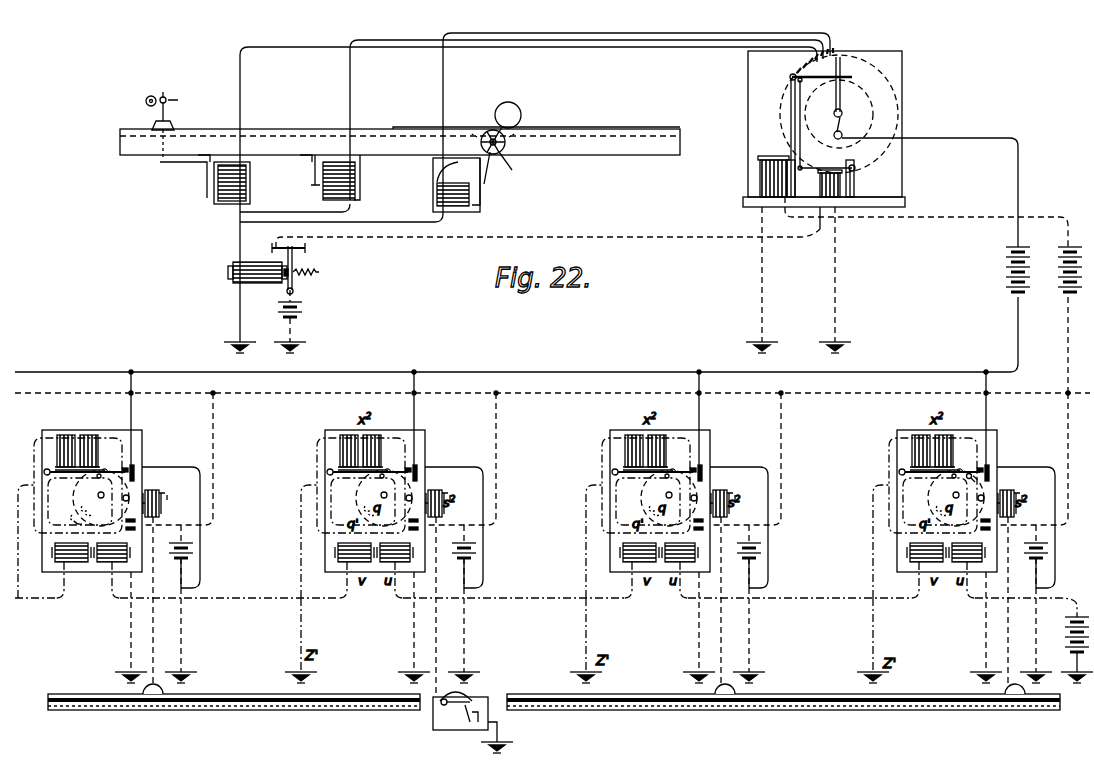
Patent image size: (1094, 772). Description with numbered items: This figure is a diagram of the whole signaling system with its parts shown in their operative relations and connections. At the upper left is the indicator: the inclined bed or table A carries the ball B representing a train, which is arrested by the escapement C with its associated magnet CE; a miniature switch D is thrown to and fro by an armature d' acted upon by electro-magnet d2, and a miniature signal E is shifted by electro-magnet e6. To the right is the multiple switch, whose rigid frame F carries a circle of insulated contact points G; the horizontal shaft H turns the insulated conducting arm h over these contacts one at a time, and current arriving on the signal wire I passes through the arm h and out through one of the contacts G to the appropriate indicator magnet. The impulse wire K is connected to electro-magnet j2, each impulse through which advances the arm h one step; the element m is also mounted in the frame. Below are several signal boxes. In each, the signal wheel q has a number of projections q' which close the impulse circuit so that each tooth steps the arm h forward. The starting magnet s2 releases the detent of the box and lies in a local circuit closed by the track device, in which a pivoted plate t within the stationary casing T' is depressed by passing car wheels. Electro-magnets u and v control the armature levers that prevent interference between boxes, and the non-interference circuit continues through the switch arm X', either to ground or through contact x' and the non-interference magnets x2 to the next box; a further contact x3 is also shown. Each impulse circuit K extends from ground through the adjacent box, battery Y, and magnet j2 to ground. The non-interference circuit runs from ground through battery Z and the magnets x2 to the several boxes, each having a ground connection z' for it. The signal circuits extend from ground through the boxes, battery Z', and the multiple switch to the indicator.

The inclined bed or table A is at (400, 142).
The ball B is at (517, 112).
The toothed wheel C is at (498, 157).
The electromagnet CE is at (456, 185).
The miniature switch D is at (523, 119).
The miniature signal E is at (167, 126).
The electro-magnet e6 is at (242, 183).
The armature d' is at (307, 170).
The electro-magnet d2 is at (351, 177).
The rigid frame F is at (824, 129).
The insulated contact points G is at (811, 60).
The insulated conducting-arm h is at (844, 98).
The horizontal shaft H is at (839, 114).
The signal wire I is at (930, 184).
The impulse wire K is at (902, 222).
The impulse electro-magnet j2 is at (766, 176).
The electromagnet m is at (825, 183).
The battery Z' is at (1007, 269).
The battery Y is at (1060, 320).
The battery Z is at (1071, 650).
The non-interference magnets x2 is at (77, 440).
The starting electro-magnet s2 is at (158, 503).
The signal wheel q is at (101, 498).
The projections q' is at (73, 523).
The electro-magnet v is at (71, 565).
The electro-magnet u is at (112, 565).
The contact x' is at (974, 466).
The switch arm X' is at (939, 481).
The contact x3 is at (965, 484).
The ground connection z' is at (28, 571).
The stationary casing T' is at (461, 725).
The plate t is at (456, 690).